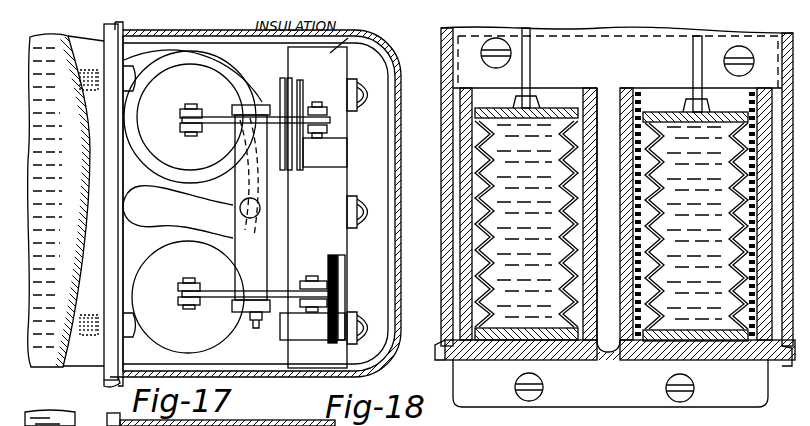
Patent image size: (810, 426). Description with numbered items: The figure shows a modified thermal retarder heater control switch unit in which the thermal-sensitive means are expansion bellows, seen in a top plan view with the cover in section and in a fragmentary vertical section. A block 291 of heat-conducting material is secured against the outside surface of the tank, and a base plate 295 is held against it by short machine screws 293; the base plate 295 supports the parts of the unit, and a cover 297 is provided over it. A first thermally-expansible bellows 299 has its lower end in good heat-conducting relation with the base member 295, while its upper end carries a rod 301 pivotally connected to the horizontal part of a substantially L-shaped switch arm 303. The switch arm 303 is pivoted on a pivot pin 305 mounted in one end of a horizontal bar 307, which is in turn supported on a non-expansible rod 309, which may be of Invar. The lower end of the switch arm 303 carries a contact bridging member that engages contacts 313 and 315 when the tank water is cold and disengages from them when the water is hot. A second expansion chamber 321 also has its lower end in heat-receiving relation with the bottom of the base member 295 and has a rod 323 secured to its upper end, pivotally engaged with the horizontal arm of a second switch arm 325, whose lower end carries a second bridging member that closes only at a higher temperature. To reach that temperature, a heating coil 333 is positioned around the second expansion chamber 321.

In FIG. 17, the block 291 is at (92, 362).
In FIG. 17, the machine screws 293 is at (135, 62).
In FIG. 18, the machine screws 293 is at (664, 388).
In FIG. 17, the base plate 295 is at (115, 42).
In FIG. 18, the cover 297 is at (445, 147).
In FIG. 17, the first thermally-expansible bellows 299 is at (200, 248).
In FIG. 18, the first thermally-expansible bellows 299 is at (552, 107).
In FIG. 17, the rod 301 is at (181, 306).
In FIG. 17, the switch arm 303 is at (211, 298).
In FIG. 17, the pivot pin 305 is at (252, 322).
In FIG. 17, the horizontal bar 307 is at (270, 246).
In FIG. 17, the non-expansible rod 309 is at (258, 200).
In FIG. 17, the contact 313 is at (342, 298).
In FIG. 17, the contact 315 is at (345, 258).
In FIG. 17, the second expansion chamber 321 is at (198, 72).
In FIG. 18, the second expansion chamber 321 is at (670, 112).
In FIG. 18, the rod 323 is at (694, 50).
In FIG. 17, the switch arm 325 is at (217, 128).
In FIG. 18, the heating coil 333 is at (648, 93).